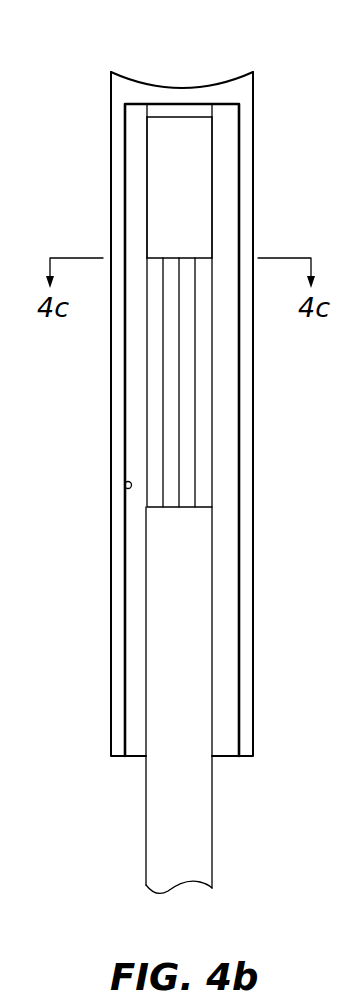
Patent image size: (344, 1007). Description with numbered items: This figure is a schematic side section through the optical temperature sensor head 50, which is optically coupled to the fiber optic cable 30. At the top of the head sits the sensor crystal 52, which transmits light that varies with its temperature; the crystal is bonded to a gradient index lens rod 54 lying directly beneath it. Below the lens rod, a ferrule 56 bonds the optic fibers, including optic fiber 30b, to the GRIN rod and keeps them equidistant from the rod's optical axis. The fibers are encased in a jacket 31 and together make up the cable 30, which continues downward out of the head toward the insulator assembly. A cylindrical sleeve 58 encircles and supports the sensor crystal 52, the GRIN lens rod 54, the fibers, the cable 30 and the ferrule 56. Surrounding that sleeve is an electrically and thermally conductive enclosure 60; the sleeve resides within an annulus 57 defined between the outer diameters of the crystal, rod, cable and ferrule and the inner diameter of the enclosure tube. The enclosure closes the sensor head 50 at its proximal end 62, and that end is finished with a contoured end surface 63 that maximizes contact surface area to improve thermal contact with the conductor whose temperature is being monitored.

The optical temperature sensor head 50 is at (114, 47).
The proximal end 62 is at (118, 90).
The contoured end surface 63 is at (232, 80).
The enclosure 60 is at (112, 528).
The cylindrical sleeve 58 is at (132, 383).
The annulus 57 is at (124, 484).
The ferrule 56 is at (153, 347).
The sensor crystal 52 is at (208, 110).
The gradient index (GRIN) lens rod 54 is at (202, 164).
The optic fiber 30b is at (168, 430).
The jacket 31 is at (153, 804).
The fiber optic cable 30 is at (162, 895).